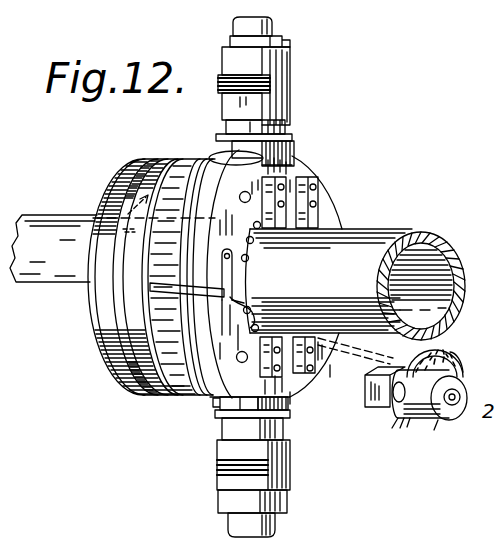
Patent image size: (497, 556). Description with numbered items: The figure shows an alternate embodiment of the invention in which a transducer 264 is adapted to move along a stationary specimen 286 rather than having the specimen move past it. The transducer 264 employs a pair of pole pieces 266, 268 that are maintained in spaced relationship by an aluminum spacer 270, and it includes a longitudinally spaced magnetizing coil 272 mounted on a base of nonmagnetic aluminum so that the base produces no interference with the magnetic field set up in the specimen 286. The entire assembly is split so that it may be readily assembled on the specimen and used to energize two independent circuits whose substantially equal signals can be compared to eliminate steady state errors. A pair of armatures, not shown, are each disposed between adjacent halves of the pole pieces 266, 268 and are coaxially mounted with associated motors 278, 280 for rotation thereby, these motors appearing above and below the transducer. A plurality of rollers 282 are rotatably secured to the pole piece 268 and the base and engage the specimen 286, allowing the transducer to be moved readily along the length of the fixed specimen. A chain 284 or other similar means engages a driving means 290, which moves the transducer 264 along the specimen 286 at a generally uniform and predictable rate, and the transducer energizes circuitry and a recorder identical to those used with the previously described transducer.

The transducer 264 is at (382, 133).
The pole piece 266 is at (214, 392).
The pole piece 268 is at (226, 402).
The aluminum spacer 270 is at (222, 398).
The magnetizing coil 272 is at (150, 396).
The motor 278 is at (283, 83).
The motor 280 is at (283, 472).
The rollers 282 is at (310, 218).
The chain 284 is at (270, 325).
The specimen 286 is at (378, 237).
The driving means 290 is at (425, 427).